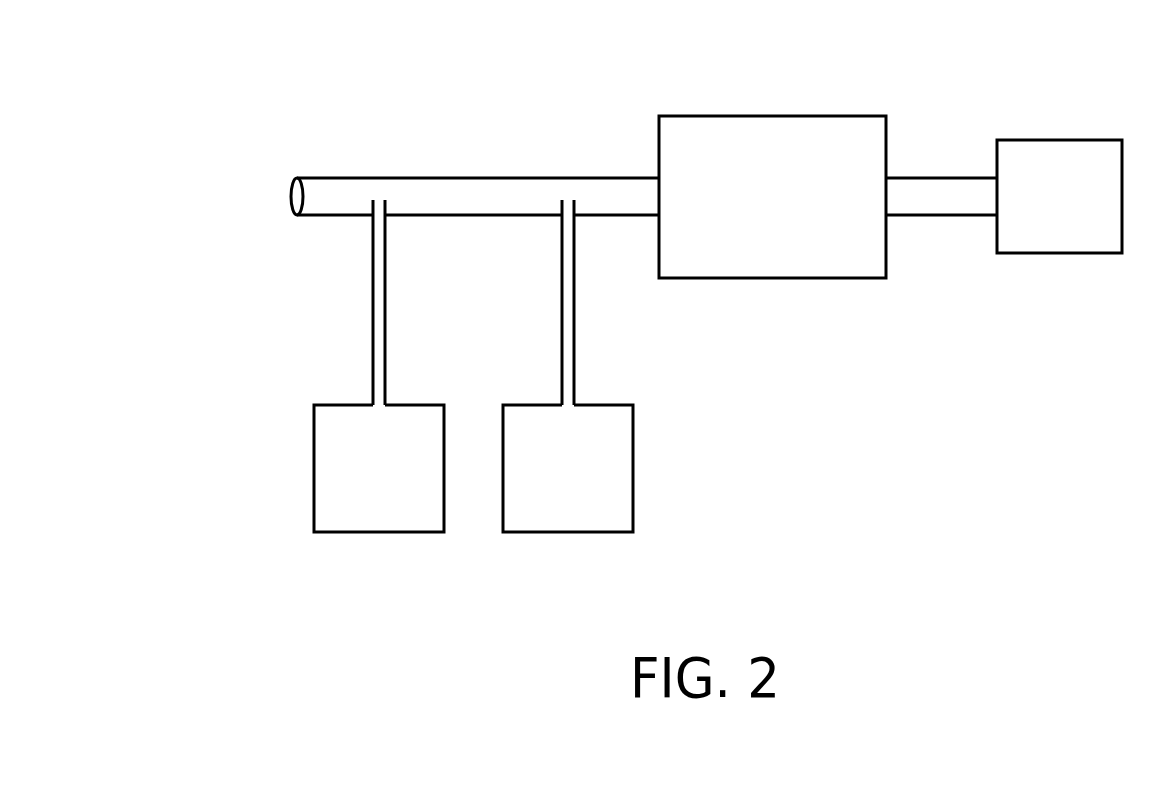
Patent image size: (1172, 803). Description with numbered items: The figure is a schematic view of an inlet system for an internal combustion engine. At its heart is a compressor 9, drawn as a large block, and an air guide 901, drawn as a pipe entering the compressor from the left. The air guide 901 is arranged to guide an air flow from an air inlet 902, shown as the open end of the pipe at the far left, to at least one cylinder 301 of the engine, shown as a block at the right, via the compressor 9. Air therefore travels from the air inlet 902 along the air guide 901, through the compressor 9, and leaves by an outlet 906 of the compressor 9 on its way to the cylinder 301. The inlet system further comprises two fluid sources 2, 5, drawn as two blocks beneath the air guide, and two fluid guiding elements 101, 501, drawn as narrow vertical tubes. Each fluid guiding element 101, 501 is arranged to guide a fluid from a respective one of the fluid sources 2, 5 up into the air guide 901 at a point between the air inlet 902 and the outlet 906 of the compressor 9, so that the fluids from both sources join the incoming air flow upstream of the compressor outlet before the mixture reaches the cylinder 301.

The air guide 901 is at (472, 177).
The air inlet 902 is at (296, 197).
The compressor 9 is at (775, 116).
The outlet of the compressor 906 is at (893, 217).
The cylinder 301 is at (1063, 140).
The fluid guiding element 101 is at (372, 302).
The fluid guiding element 501 is at (561, 302).
The fluid source 2 is at (375, 533).
The fluid source 5 is at (564, 533).